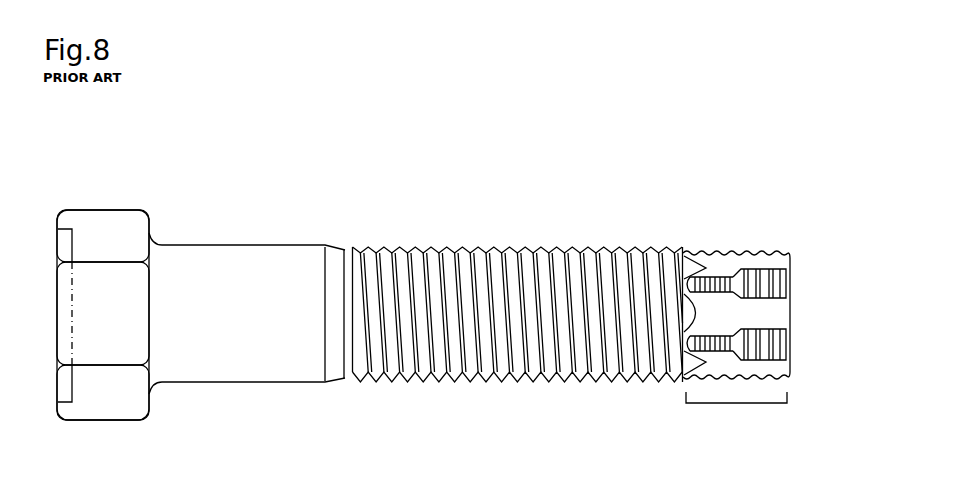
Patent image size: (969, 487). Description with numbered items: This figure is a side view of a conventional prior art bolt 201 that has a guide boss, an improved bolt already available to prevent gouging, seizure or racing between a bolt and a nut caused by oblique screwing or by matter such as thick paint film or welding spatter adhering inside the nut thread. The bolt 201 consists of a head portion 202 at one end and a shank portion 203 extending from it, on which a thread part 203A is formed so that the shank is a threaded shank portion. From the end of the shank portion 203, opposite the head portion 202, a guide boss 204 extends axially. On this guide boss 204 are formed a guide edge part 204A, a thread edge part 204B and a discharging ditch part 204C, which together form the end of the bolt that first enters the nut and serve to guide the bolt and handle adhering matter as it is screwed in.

The bolt 201 is at (322, 236).
The head portion 202 is at (120, 212).
The shank portion 203 is at (481, 248).
The thread part 203A is at (543, 248).
The guide boss 204 is at (727, 251).
The guide edge part 204A is at (757, 250).
The thread edge part 204B is at (710, 250).
The discharging ditch part 204C is at (720, 316).